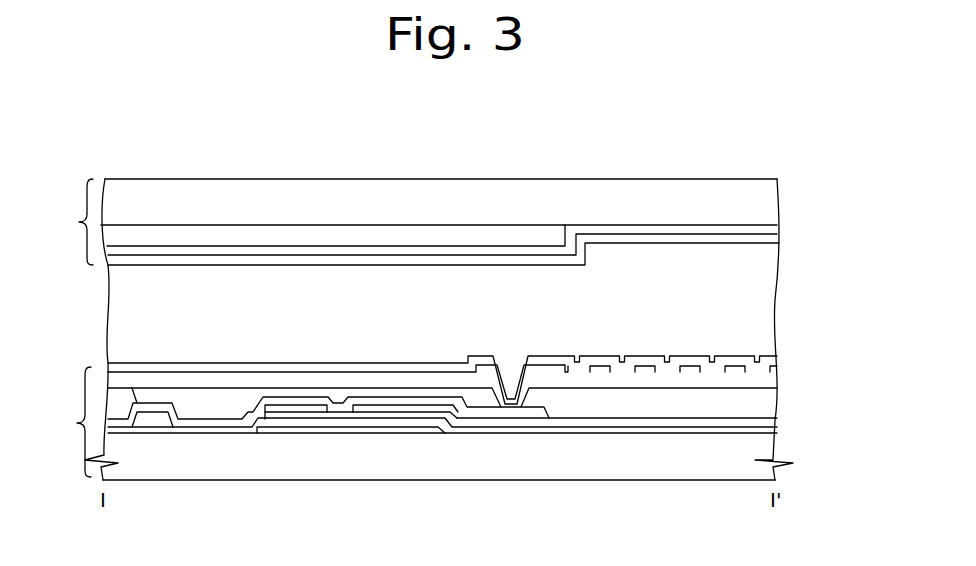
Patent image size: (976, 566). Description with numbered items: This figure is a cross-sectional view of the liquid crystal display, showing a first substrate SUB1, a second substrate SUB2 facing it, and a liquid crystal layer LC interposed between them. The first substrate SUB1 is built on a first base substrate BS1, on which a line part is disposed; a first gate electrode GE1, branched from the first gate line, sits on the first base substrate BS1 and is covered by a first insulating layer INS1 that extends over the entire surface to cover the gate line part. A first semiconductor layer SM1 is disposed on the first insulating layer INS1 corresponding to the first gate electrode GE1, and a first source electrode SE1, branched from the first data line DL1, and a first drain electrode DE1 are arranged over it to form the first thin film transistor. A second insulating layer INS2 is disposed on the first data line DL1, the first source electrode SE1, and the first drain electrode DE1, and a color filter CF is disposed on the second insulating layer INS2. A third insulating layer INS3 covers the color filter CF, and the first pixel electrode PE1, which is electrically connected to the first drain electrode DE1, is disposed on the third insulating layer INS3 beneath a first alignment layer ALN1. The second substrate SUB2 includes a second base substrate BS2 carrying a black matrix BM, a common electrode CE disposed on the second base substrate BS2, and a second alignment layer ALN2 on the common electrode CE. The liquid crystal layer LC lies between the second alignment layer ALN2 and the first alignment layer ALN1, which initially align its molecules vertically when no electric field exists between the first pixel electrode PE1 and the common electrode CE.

The second substrate SUB2 is at (60, 222).
The first substrate SUB1 is at (401, 423).
The second base substrate BS2 is at (762, 198).
The black matrix BM is at (400, 225).
The common electrode CE is at (765, 233).
The second alignment layer ALN2 is at (766, 245).
The liquid crystal layer LC is at (765, 302).
The first alignment layer ALN1 is at (777, 358).
The third insulating layer INS3 is at (770, 380).
The color filter CF is at (772, 403).
The second insulating layer INS2 is at (765, 423).
The first insulating layer INS1 is at (765, 432).
The first base substrate BS1 is at (763, 447).
The first data line DL1 is at (160, 421).
The first gate electrode GE1 is at (328, 430).
The first semiconductor layer SM1 is at (377, 413).
The first source electrode SE1 is at (272, 407).
The first drain electrode DE1 is at (430, 408).
The first pixel electrode PE1 is at (565, 372).